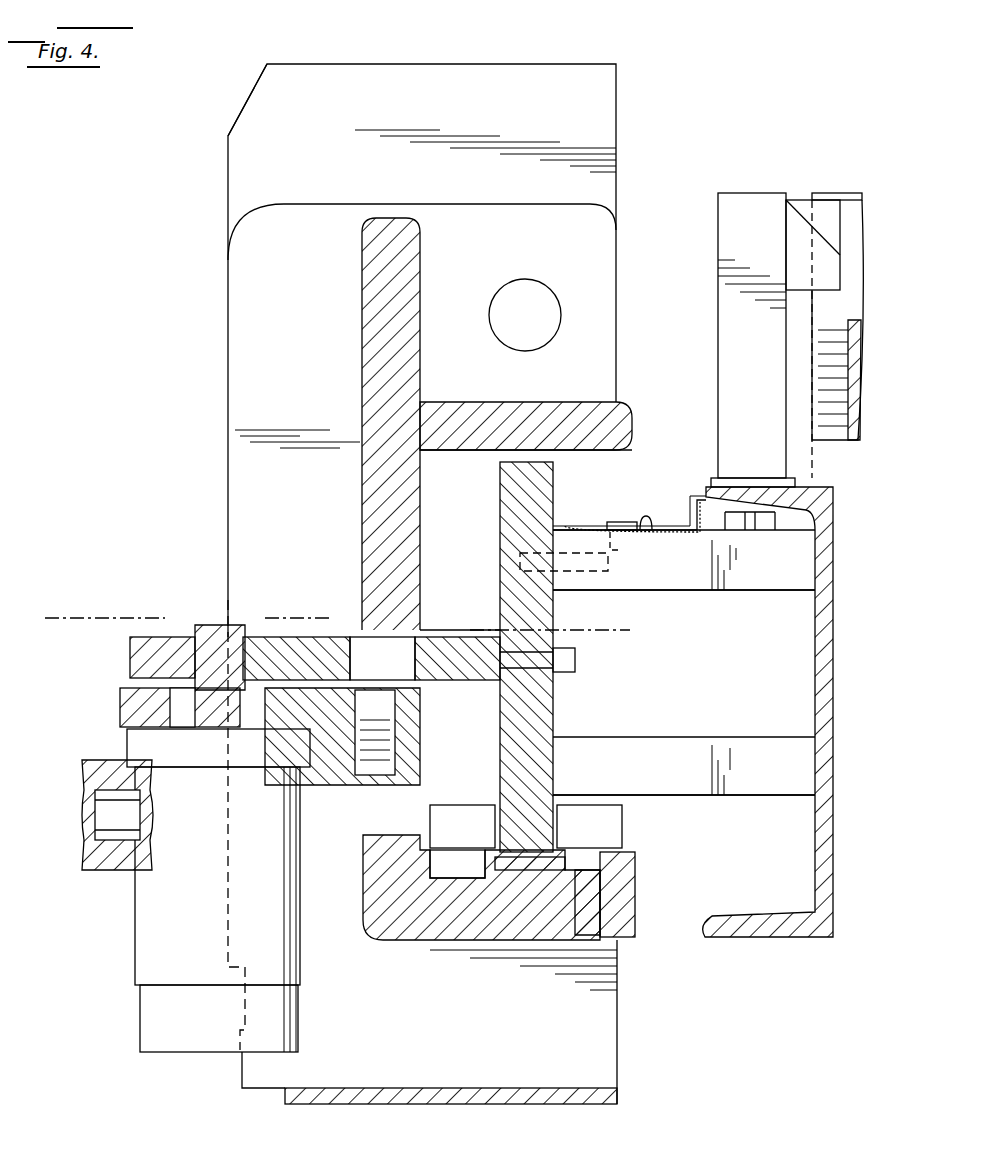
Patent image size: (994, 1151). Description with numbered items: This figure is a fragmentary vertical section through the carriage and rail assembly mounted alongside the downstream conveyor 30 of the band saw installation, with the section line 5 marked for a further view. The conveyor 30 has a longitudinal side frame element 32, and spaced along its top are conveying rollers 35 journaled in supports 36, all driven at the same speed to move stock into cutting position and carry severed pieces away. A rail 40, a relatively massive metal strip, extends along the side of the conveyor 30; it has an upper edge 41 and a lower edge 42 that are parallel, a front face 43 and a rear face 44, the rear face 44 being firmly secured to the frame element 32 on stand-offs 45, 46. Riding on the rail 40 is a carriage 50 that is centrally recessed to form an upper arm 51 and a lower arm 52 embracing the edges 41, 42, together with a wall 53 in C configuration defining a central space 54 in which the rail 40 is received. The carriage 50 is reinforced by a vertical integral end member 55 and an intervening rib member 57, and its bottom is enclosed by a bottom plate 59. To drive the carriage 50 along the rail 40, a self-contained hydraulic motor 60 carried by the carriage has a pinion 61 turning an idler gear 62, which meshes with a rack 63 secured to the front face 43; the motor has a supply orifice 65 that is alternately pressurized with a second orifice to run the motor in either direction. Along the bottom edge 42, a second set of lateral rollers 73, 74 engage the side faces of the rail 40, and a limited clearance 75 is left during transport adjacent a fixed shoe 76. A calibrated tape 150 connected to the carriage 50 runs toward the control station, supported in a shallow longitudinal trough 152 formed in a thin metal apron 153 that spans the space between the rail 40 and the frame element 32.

The conveyor 30 is at (775, 160).
The longitudinal frame element 32 is at (815, 683).
The conveying roller 35 is at (848, 200).
The support 36 is at (730, 198).
The rail 40 is at (520, 542).
The upper edge 41 is at (525, 450).
The lower edge 42 is at (503, 860).
The front face 43 is at (500, 498).
The rear face 44 is at (553, 492).
The stand-off 45 is at (754, 590).
The stand-off 46 is at (764, 794).
The carriage 50 is at (226, 430).
The upper arm 51 is at (634, 422).
The lower arm 52 is at (640, 906).
The wall 53 is at (366, 505).
The central space 54 is at (472, 725).
The end member 55 is at (228, 170).
The rib member 57 is at (302, 357).
The bottom plate 59 is at (492, 1088).
The hydraulic motor 60 is at (209, 937).
The pinion 61 is at (130, 660).
The idler gear 62 is at (325, 636).
The rack 63 is at (480, 640).
The supply orifice 65 is at (112, 823).
The lateral roller 73 is at (460, 805).
The lateral roller 74 is at (625, 830).
The clearance 75 is at (495, 850).
The fixed shoe 76 is at (540, 855).
The tape 150 is at (664, 525).
The trough 152 is at (650, 520).
The apron 153 is at (598, 534).
The section line 5- 5 is at (53, 655).